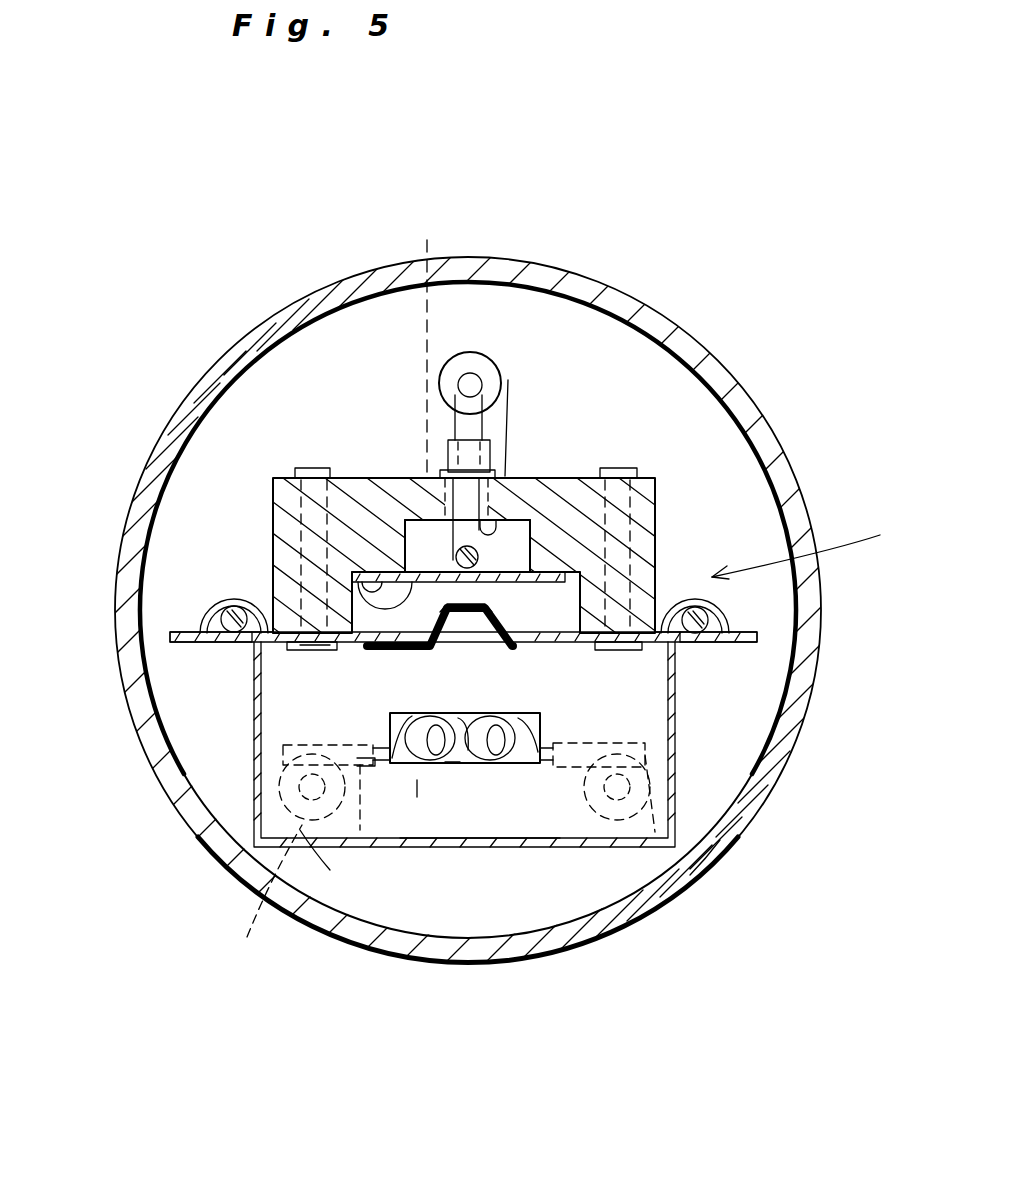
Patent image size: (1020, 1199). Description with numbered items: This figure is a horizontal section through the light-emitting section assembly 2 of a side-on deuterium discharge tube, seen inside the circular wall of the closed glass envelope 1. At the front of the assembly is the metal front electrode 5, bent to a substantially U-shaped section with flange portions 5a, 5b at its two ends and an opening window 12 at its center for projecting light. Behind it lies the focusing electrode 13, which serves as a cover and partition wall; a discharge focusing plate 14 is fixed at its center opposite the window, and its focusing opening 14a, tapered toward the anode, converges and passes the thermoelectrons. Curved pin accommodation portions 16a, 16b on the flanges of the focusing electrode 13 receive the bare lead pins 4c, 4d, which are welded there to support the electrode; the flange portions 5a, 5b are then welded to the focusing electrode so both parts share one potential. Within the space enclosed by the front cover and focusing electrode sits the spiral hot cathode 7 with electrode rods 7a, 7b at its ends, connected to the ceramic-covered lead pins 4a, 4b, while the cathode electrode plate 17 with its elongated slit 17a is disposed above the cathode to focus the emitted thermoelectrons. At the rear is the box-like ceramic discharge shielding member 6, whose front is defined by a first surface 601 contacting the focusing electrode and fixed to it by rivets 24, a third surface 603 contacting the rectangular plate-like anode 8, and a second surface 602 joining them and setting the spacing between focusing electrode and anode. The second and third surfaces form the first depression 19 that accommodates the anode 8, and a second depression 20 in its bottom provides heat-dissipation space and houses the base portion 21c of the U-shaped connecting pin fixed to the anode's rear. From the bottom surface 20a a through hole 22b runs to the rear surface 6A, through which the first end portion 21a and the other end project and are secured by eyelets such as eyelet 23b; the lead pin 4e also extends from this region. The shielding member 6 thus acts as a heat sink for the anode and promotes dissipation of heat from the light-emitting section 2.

The glass envelope 1 is at (683, 348).
The light-emitting section assembly 2 is at (908, 556).
The lead pin 4a is at (275, 901).
The lead pin 4b is at (690, 875).
The lead pin 4c is at (175, 636).
The lead pin 4d is at (757, 635).
The lead pin 4e is at (468, 352).
The front electrode 5 is at (680, 800).
The flange portion 5a is at (223, 643).
The flange portion 5b is at (700, 650).
The discharge shielding member 6 is at (640, 505).
The rear surface 6A is at (560, 478).
The first surface 601 is at (270, 625).
The second surface 602 is at (580, 583).
The third surface 603 is at (353, 572).
The hot cathode 7 is at (510, 720).
The electrode rod 7a is at (360, 837).
The electrode rod 7b is at (645, 760).
The anode 8 is at (352, 572).
The opening window 12 is at (510, 848).
The focusing electrode 13 is at (292, 653).
The discharge focusing plate 14 is at (393, 652).
The focusing opening 14a is at (477, 628).
The pin accommodation portion 16a is at (210, 610).
The pin accommodation portion 16b is at (722, 610).
The cathode electrode plate 17 is at (417, 797).
The slit 17a is at (460, 752).
The first depression 19 is at (550, 610).
The second depression 20 is at (512, 530).
The bottom surface 20a is at (490, 528).
The first end portion 21a is at (473, 535).
The base portion 21c is at (453, 558).
The through hole 22b is at (417, 240).
The eyelet 23b is at (508, 380).
The rivet 24 is at (618, 648).